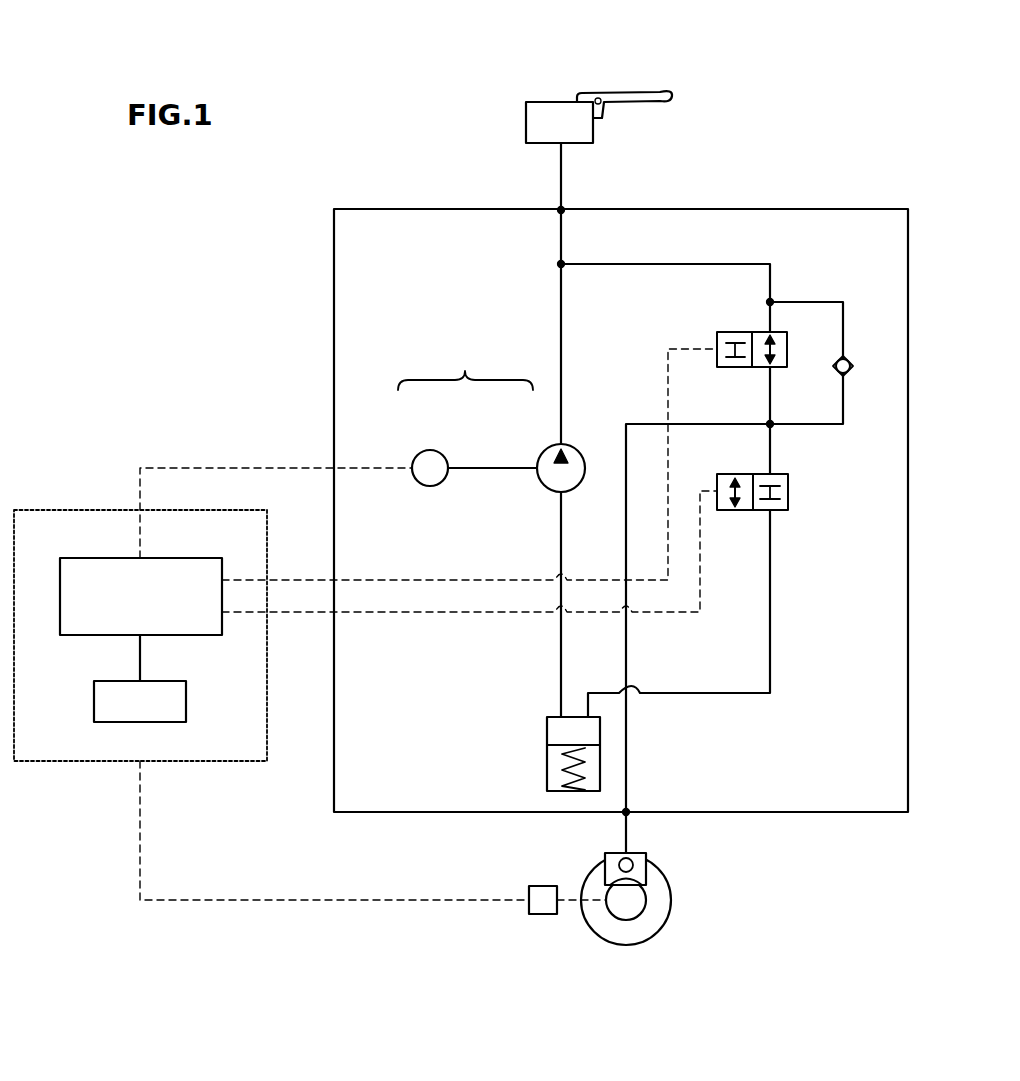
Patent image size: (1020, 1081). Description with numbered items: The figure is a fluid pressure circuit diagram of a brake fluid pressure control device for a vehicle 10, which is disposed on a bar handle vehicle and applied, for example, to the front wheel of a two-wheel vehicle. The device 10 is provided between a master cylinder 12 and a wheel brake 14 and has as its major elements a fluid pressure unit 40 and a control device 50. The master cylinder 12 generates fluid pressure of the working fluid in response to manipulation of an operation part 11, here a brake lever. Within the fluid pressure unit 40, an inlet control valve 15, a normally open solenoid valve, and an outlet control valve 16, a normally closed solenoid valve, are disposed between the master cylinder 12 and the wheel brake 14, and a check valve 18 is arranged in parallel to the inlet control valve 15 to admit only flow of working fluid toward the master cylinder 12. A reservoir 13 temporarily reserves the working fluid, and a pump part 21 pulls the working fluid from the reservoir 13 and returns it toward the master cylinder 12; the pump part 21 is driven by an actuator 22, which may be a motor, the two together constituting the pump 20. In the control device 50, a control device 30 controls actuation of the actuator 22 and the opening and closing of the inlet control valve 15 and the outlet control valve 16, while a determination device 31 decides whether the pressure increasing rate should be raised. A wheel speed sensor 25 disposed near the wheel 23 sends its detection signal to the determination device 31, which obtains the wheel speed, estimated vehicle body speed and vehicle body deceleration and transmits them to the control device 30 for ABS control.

The brake fluid pressure control device for a vehicle 10 is at (810, 70).
The operation part 11 is at (675, 93).
The master cylinder 12 is at (557, 113).
The reservoir 13 is at (552, 732).
The wheel brake 14 is at (637, 872).
The inlet control valve 15 is at (718, 333).
The outlet control valve 16 is at (732, 473).
The check valve 18 is at (853, 373).
The pump 20 is at (465, 364).
The pump part 21 is at (547, 448).
The actuator 22 is at (430, 448).
The wheel 23 is at (663, 925).
The wheel speed sensor 25 is at (543, 915).
The control device 30 is at (182, 556).
The determination device 31 is at (190, 697).
The fluid pressure unit 40 is at (808, 208).
The control device 50 is at (215, 765).